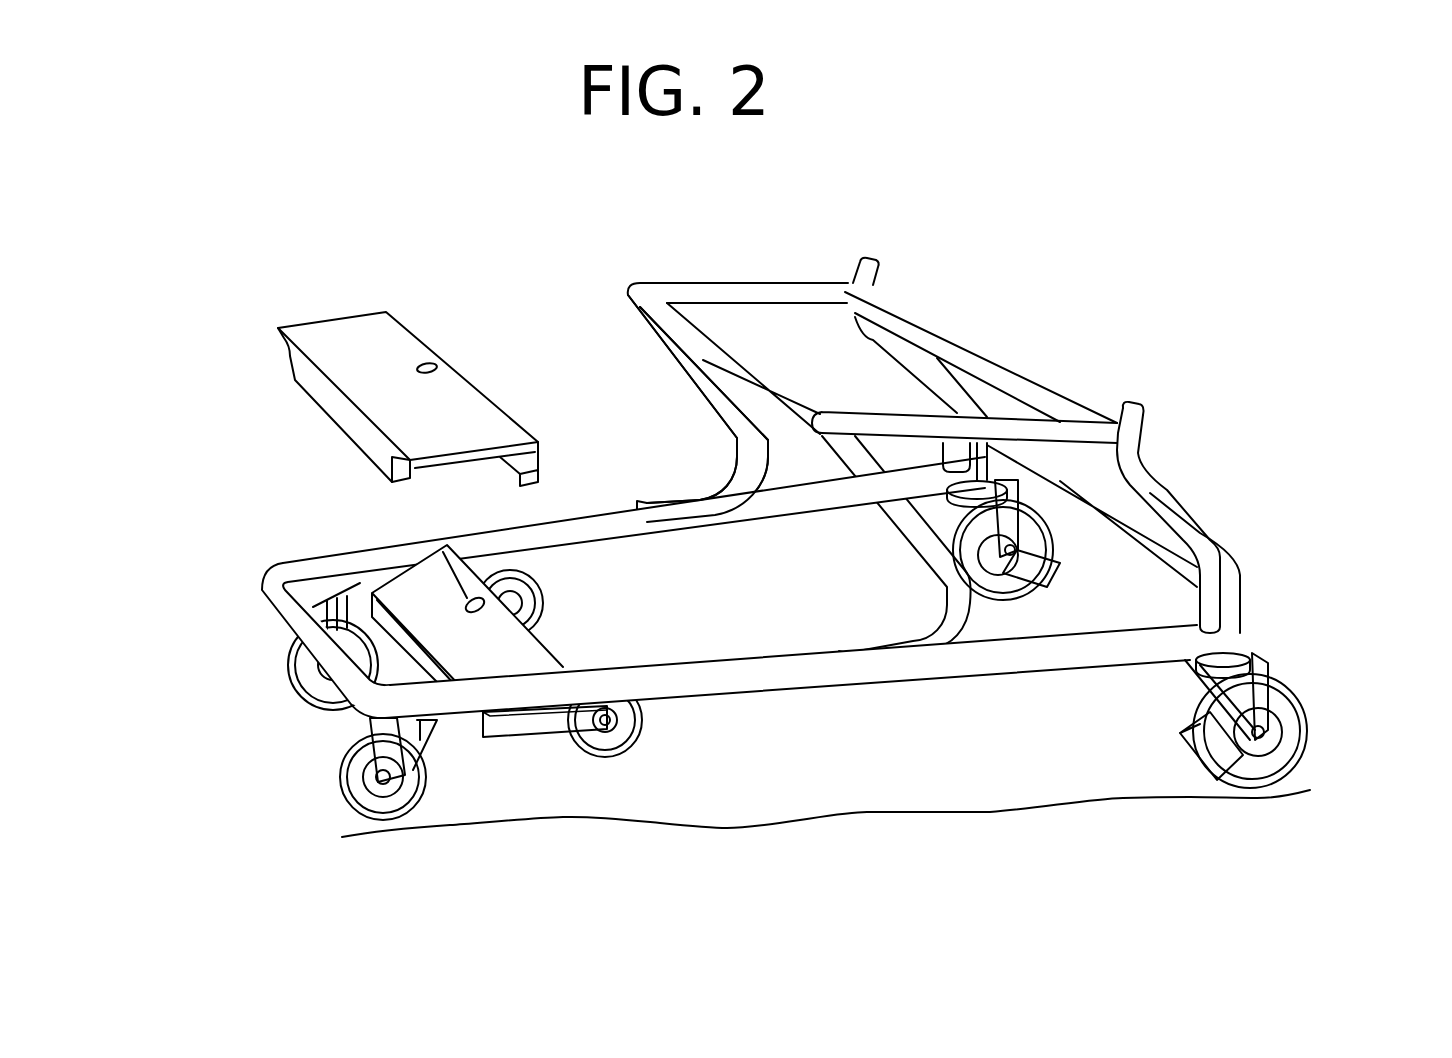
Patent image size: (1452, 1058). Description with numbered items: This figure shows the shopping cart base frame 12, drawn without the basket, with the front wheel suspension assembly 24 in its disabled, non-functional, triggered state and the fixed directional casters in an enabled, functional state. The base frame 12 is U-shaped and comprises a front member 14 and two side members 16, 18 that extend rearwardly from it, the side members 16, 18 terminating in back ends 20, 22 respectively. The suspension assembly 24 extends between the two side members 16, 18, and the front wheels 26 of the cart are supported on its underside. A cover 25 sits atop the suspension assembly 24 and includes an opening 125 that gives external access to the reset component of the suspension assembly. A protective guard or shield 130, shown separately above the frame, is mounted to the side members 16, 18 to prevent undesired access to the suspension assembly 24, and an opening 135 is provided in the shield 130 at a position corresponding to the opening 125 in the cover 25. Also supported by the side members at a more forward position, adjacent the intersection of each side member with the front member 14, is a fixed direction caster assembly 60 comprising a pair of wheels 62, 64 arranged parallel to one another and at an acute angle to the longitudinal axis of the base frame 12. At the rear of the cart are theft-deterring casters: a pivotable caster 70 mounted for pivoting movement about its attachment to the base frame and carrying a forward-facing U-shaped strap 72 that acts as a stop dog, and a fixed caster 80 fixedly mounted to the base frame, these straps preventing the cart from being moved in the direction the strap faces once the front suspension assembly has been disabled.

The base frame 12 is at (670, 607).
The front member 14 is at (270, 618).
The side member 16 is at (618, 525).
The side member 18 is at (727, 676).
The back end 20 is at (928, 480).
The back end 22 is at (1270, 637).
The front wheel suspension assembly 24 is at (429, 613).
The cover 25 is at (490, 650).
The front wheels 26 is at (497, 573).
The fixed direction caster assembly 60 is at (299, 725).
The wheel 62 is at (297, 728).
The wheel 64 is at (287, 675).
The pivotable caster 70 is at (1283, 771).
The U-shaped strap 72 is at (1205, 765).
The fixed caster 80 is at (1050, 542).
The opening 125 is at (452, 598).
The protective guard or shield 130 is at (359, 386).
The opening 135 is at (428, 362).